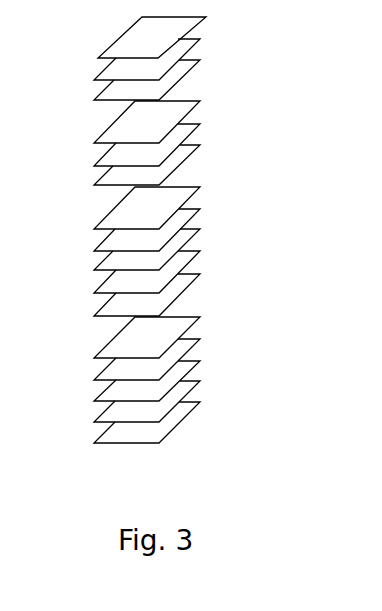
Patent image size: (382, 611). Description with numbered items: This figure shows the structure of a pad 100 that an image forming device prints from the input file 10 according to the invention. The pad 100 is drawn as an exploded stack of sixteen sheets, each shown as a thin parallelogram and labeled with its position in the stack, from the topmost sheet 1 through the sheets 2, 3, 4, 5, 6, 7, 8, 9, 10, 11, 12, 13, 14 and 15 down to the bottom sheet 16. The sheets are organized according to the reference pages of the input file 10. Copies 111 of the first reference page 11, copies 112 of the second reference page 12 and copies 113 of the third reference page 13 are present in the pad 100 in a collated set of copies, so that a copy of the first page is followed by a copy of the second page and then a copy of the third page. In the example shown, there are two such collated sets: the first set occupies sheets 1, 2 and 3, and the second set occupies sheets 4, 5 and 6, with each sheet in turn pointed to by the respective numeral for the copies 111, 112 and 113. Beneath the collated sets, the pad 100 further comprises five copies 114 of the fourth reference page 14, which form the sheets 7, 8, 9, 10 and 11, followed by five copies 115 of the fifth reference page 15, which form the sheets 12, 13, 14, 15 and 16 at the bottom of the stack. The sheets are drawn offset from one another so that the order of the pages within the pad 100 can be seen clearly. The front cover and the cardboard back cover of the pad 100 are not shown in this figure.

The pad 100 is at (142, 243).
The first layer 1 is at (152, 38).
The second layer 2 is at (147, 60).
The third layer 3 is at (147, 80).
The fourth layer 4 is at (147, 122).
The fifth layer 5 is at (147, 145).
The sixth layer 6 is at (147, 166).
The seventh layer 7 is at (147, 208).
The eighth layer 8 is at (147, 231).
The ninth layer 9 is at (147, 250).
The input file 10 is at (147, 272).
The first reference page 11 is at (147, 295).
The second reference page 12 is at (147, 338).
The third reference page 13 is at (147, 360).
The fourth reference page 14 is at (147, 381).
The fifth reference page 15 is at (147, 402).
The sixteenth layer 16 is at (147, 423).
The copies of the first reference page 111 is at (178, 80).
The copies of the second reference page 112 is at (176, 103).
The copies of the third reference page 113 is at (176, 123).
The copies of the fourth reference page 114 is at (183, 252).
The copies of the fifth reference page 115 is at (178, 380).